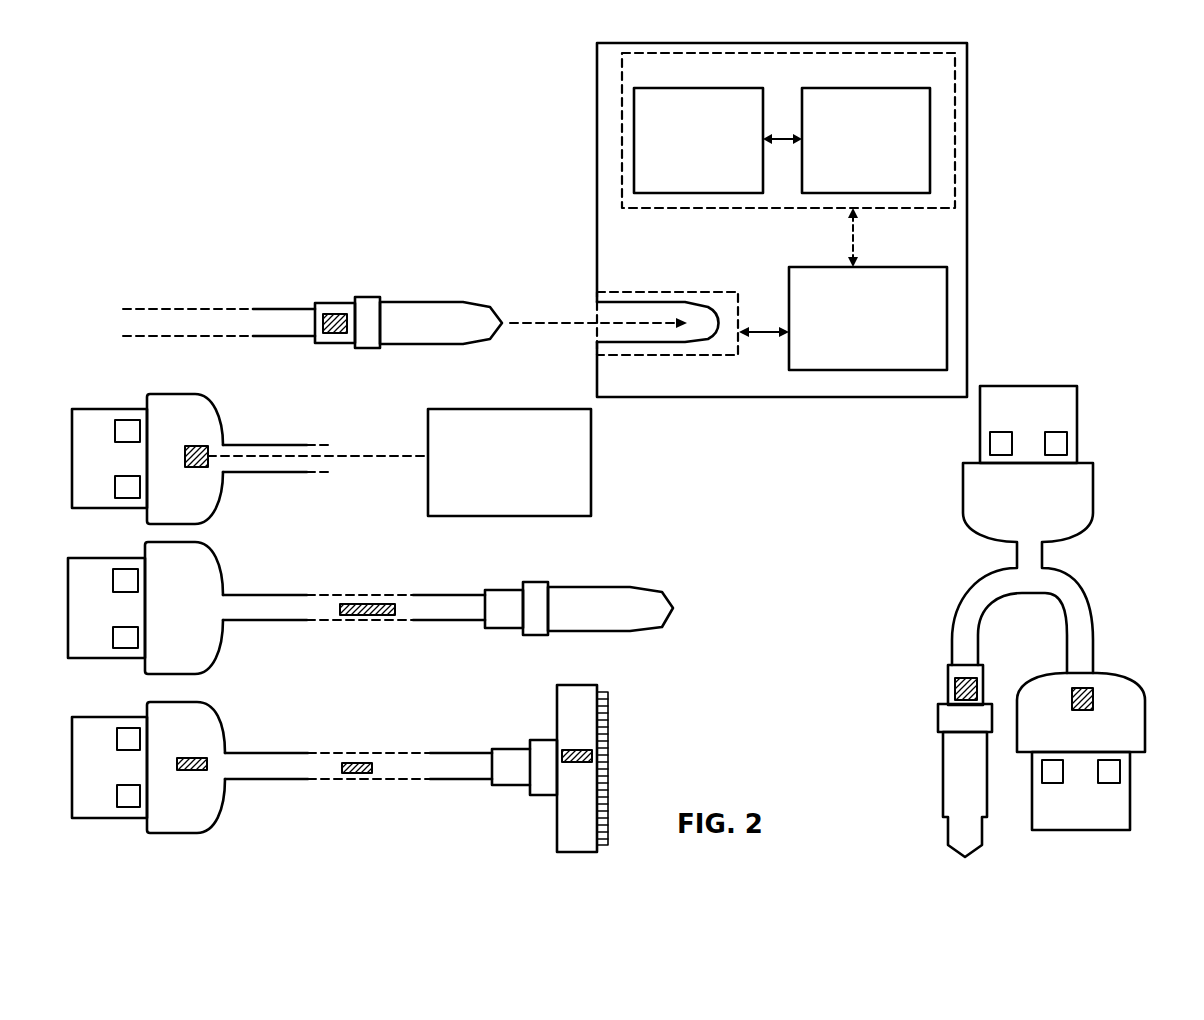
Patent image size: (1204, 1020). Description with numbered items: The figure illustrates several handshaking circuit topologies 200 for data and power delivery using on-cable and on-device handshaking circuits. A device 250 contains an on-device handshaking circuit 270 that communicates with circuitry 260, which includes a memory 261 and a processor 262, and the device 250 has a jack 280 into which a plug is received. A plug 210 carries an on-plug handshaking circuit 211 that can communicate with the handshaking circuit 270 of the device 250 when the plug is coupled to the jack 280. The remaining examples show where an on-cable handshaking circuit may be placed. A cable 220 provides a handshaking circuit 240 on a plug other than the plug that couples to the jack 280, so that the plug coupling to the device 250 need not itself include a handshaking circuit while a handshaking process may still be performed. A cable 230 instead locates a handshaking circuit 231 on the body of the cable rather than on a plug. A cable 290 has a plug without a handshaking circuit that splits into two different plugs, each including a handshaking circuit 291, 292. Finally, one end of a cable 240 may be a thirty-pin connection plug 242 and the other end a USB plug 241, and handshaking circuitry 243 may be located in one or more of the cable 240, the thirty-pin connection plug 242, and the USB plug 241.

The handshaking circuit topologies 200 is at (289, 100).
The plug 210 is at (363, 297).
The handshaking circuit 211 is at (328, 313).
The cable 220 is at (182, 394).
The cable 230 is at (480, 590).
The handshaking circuit 231 is at (363, 604).
The handshaking circuit 240 is at (557, 422).
The USB plug 241 is at (205, 825).
The 30-pin connection plug 242 is at (527, 775).
The handshaking circuitry 243 is at (205, 758).
The device 250 is at (595, 87).
The circuitry 260 is at (623, 208).
The memory 261 is at (658, 191).
The processor 262 is at (825, 191).
The handshaking circuit 270 is at (789, 277).
The jack 280 is at (697, 292).
The cable 290 is at (1090, 612).
The handshaking circuit 291 is at (1093, 690).
The handshaking circuit 292 is at (955, 682).